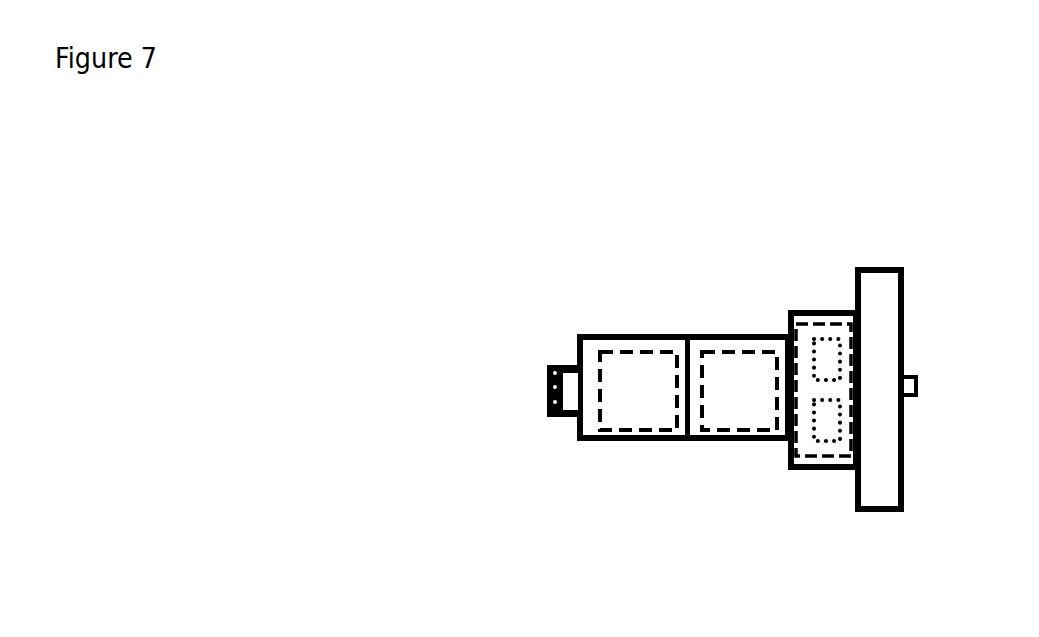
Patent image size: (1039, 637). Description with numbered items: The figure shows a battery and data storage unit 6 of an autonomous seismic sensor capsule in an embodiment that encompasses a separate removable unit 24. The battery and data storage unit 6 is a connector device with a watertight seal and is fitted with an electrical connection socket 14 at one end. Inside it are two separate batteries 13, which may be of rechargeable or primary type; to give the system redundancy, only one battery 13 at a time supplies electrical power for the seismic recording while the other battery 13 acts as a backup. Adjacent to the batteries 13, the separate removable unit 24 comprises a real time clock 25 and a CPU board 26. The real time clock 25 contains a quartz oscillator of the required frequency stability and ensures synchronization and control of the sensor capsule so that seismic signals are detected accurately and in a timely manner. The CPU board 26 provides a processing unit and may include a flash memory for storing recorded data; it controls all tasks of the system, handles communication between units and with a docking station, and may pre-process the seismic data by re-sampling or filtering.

The battery and data storage unit 6 is at (905, 283).
The battery 13 is at (632, 410).
The electrical connection socket 14 is at (558, 363).
The separate removable unit 24 is at (837, 458).
The real time clock 25 is at (827, 423).
The CPU board 26 is at (827, 350).